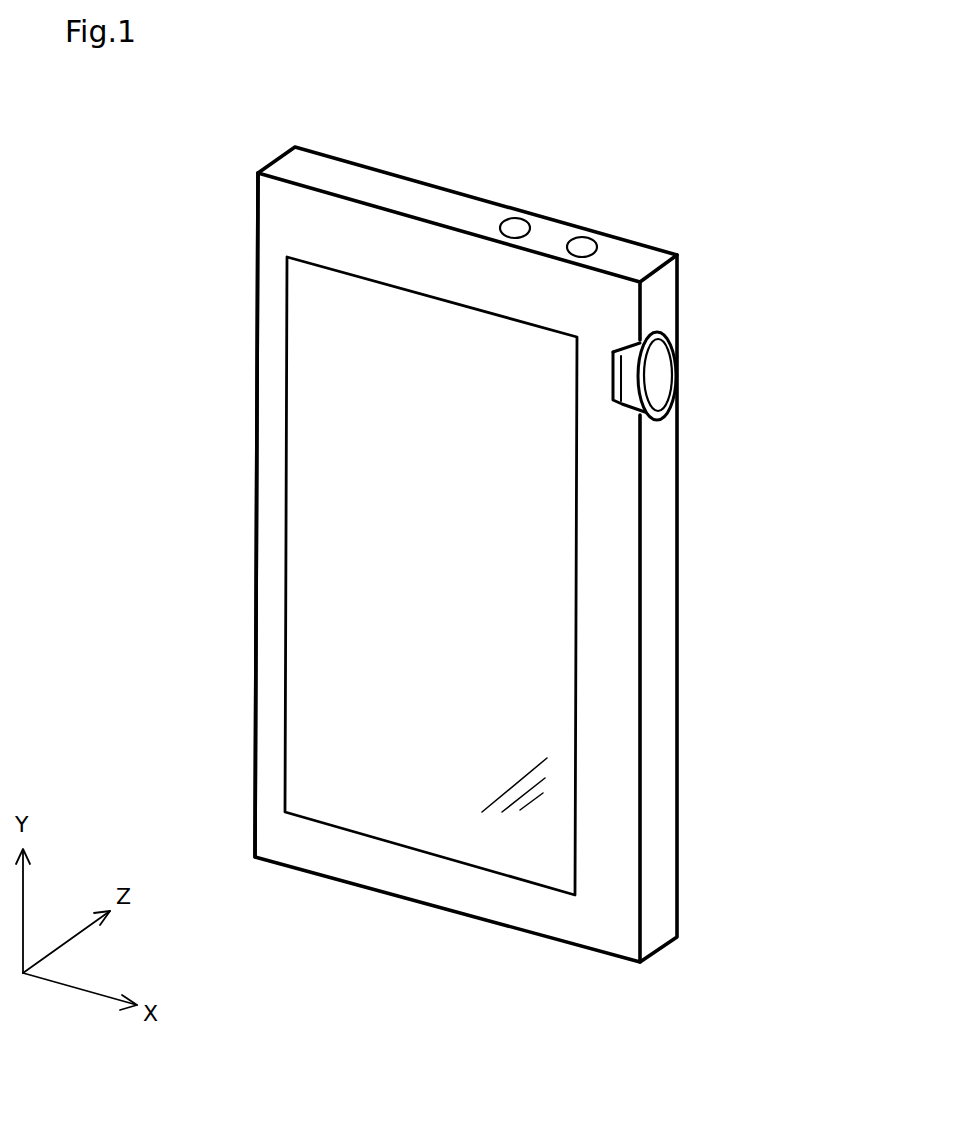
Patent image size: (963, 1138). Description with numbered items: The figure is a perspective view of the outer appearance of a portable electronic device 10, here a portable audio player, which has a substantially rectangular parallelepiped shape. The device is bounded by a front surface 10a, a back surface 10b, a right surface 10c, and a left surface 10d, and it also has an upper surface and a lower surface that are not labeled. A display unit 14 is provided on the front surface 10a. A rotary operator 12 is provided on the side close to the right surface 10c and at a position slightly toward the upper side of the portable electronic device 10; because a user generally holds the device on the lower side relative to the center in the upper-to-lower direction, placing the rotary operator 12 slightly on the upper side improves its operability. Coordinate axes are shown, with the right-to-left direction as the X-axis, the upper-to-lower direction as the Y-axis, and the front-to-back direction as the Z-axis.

The portable electronic device 10 is at (492, 128).
The front surface 10a is at (285, 238).
The back surface 10b is at (613, 220).
The right surface 10c is at (660, 300).
The left surface 10d is at (247, 212).
The rotary operator 12 is at (660, 380).
The display unit 14 is at (360, 453).